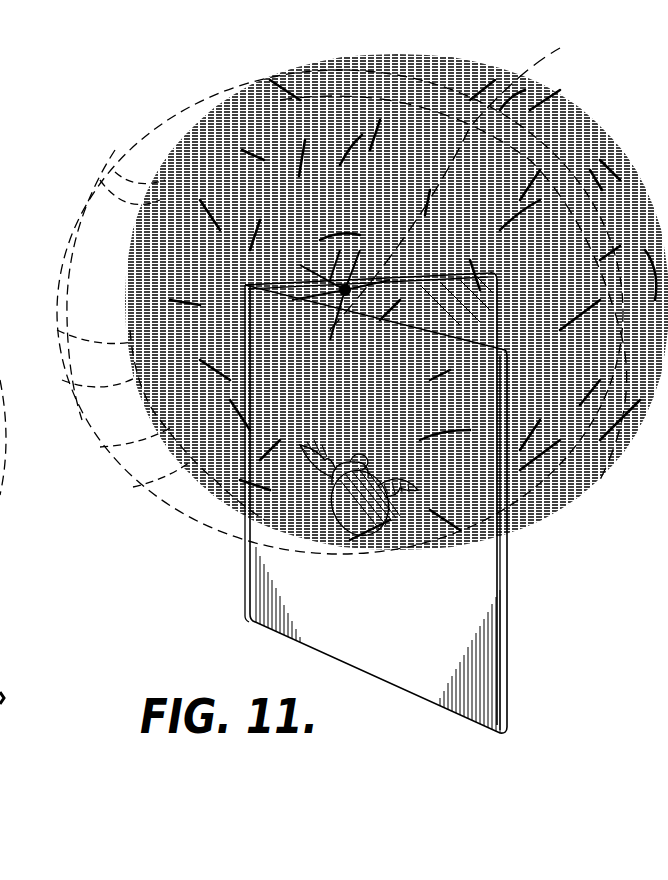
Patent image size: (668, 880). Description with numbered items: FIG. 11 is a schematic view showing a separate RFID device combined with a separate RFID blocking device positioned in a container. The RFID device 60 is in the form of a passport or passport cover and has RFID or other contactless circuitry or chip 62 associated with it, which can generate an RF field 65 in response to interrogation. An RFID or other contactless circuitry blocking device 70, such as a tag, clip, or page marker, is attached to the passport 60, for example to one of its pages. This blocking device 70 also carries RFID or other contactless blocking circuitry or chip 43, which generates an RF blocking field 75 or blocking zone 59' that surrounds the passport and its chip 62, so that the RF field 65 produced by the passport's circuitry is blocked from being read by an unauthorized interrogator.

The RFID blocking circuitry or chip 43 is at (335, 282).
The blocking zone 59' is at (453, 264).
The RFID device 60 is at (320, 628).
The RFID circuitry or chip 62 is at (250, 318).
The RF field 65 is at (92, 195).
The RFID blocking device 70 is at (345, 290).
The RF blocking field 75 is at (604, 143).